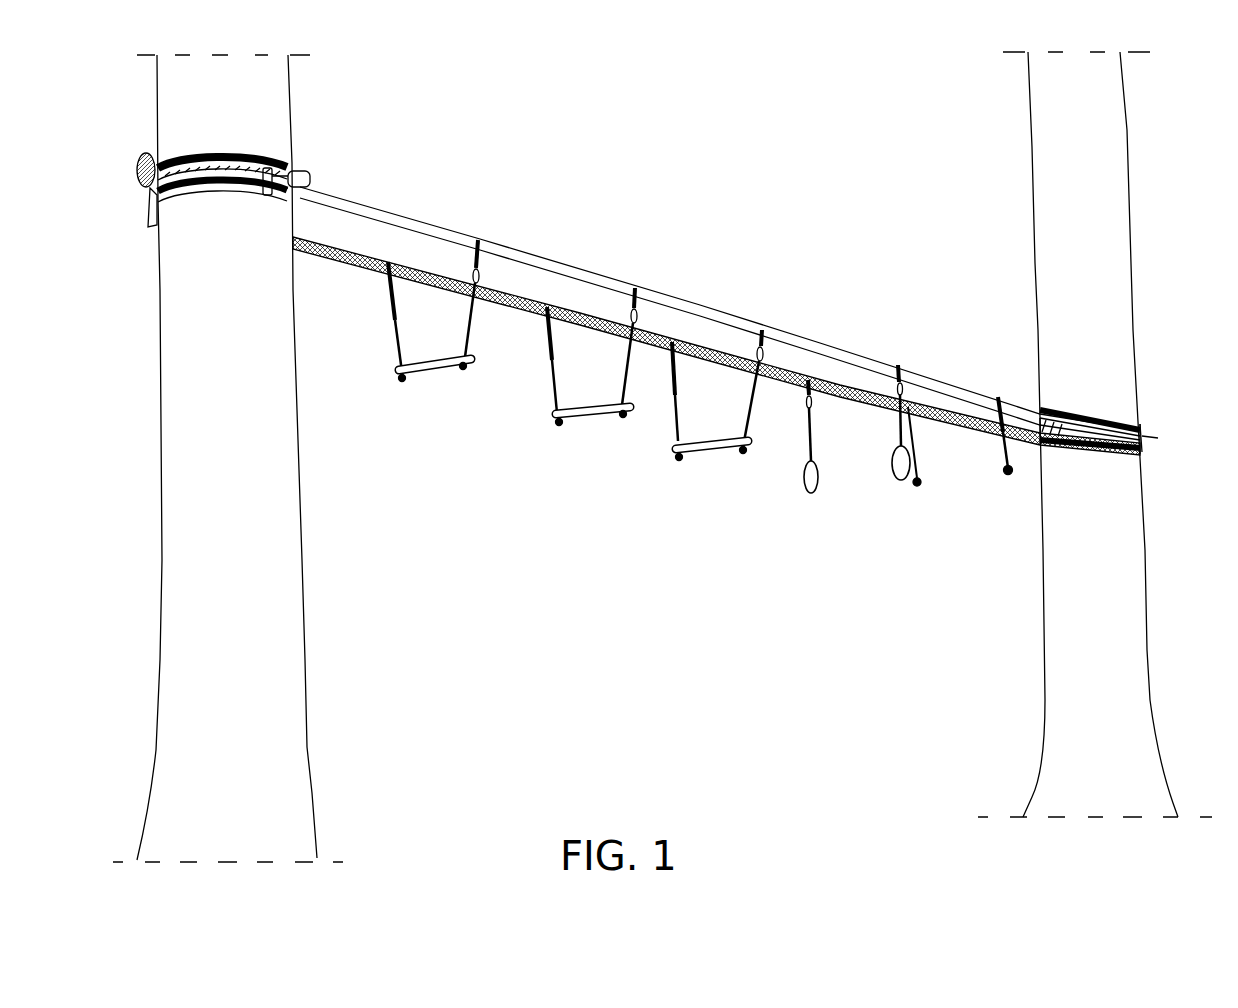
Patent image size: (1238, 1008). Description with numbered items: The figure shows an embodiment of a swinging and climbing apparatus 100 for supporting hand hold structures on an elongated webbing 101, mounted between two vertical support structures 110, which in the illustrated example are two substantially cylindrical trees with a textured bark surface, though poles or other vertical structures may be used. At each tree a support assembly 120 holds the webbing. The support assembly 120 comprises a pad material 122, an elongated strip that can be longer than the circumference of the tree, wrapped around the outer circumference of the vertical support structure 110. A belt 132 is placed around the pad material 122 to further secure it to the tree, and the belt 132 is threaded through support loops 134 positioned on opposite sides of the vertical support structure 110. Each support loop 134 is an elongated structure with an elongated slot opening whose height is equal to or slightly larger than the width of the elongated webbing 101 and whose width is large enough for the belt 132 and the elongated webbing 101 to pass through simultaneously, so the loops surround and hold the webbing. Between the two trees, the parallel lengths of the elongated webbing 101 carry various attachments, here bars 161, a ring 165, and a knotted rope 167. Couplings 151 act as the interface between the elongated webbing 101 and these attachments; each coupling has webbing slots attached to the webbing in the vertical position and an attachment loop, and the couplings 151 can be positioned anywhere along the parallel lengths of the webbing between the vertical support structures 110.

The apparatus 100 is at (622, 168).
The elongated webbing 101 is at (403, 218).
The vertical support structure 110 is at (173, 305).
The support assembly 120 is at (205, 147).
The pad material 122 is at (202, 197).
The belt 132 is at (250, 168).
The support loop 134 is at (265, 197).
The coupling 151 is at (480, 240).
The attachment 161 is at (435, 367).
The attachment 165 is at (815, 495).
The attachment 167 is at (1008, 474).